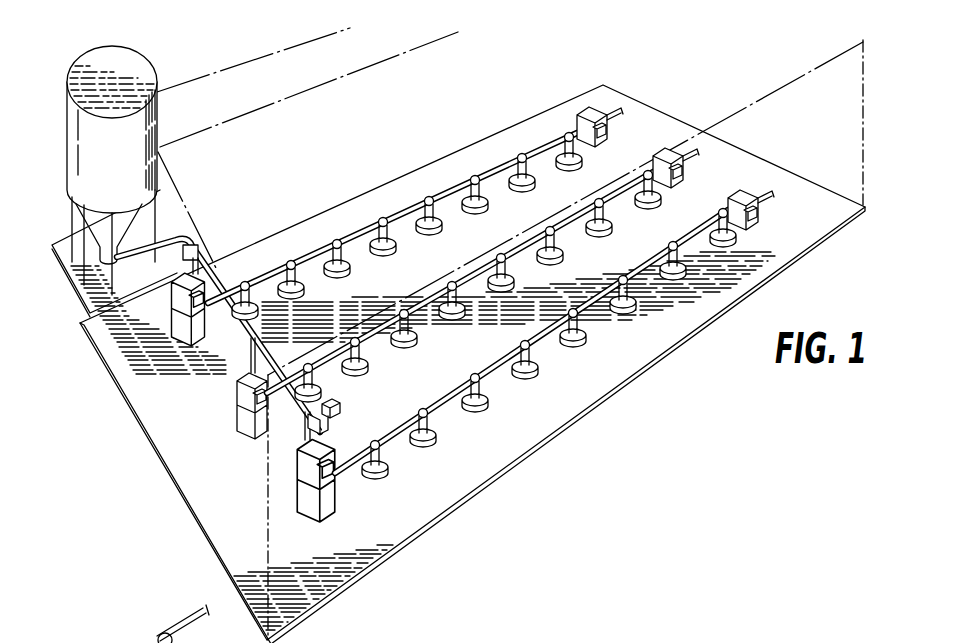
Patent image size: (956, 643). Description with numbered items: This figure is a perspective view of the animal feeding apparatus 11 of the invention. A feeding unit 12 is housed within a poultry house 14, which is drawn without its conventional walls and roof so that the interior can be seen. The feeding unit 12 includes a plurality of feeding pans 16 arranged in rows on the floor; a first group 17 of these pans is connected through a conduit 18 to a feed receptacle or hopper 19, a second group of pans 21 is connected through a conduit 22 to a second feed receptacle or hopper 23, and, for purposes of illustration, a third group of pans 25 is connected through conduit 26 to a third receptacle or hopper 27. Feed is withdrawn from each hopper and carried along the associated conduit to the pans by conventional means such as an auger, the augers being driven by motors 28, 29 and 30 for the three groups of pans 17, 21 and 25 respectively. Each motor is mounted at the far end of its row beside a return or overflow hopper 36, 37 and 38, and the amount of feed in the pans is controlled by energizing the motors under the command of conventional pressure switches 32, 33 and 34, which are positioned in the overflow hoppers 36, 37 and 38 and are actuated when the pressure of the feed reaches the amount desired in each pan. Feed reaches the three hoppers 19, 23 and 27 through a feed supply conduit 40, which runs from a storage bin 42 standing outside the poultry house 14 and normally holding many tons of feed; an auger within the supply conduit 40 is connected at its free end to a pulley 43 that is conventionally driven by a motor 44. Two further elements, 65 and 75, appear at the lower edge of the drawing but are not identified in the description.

The animal feeding apparatus 11 is at (70, 294).
The feeding unit 12 is at (476, 492).
The poultry house 14 is at (866, 130).
The feeding pans 16 is at (490, 402).
The first group of pans 17 is at (411, 238).
The conduit 18 is at (398, 213).
The feed receptacle or hopper 19 is at (188, 340).
The second group of pans 21 is at (441, 292).
The conduit 22 is at (575, 221).
The second feed receptacle or hopper 23 is at (236, 402).
The third group of pans 25 is at (487, 378).
The conduit 26 is at (401, 437).
The third receptacle or hopper 27 is at (306, 492).
The motor 28 is at (614, 108).
The motor 29 is at (700, 142).
The motor 30 is at (773, 185).
The pressure switch 32 is at (612, 128).
The pressure switch 33 is at (688, 166).
The pressure switch 34 is at (764, 212).
The return or overflow hopper 36 is at (590, 106).
The return or overflow hopper 37 is at (655, 160).
The return or overflow hopper 38 is at (728, 206).
The feed supply conduit 40 is at (303, 422).
The storage bin 42 is at (72, 144).
The pulley 43 is at (330, 424).
The motor 44 is at (336, 408).
The pivot 65 is at (118, 642).
The arm 75 is at (188, 624).